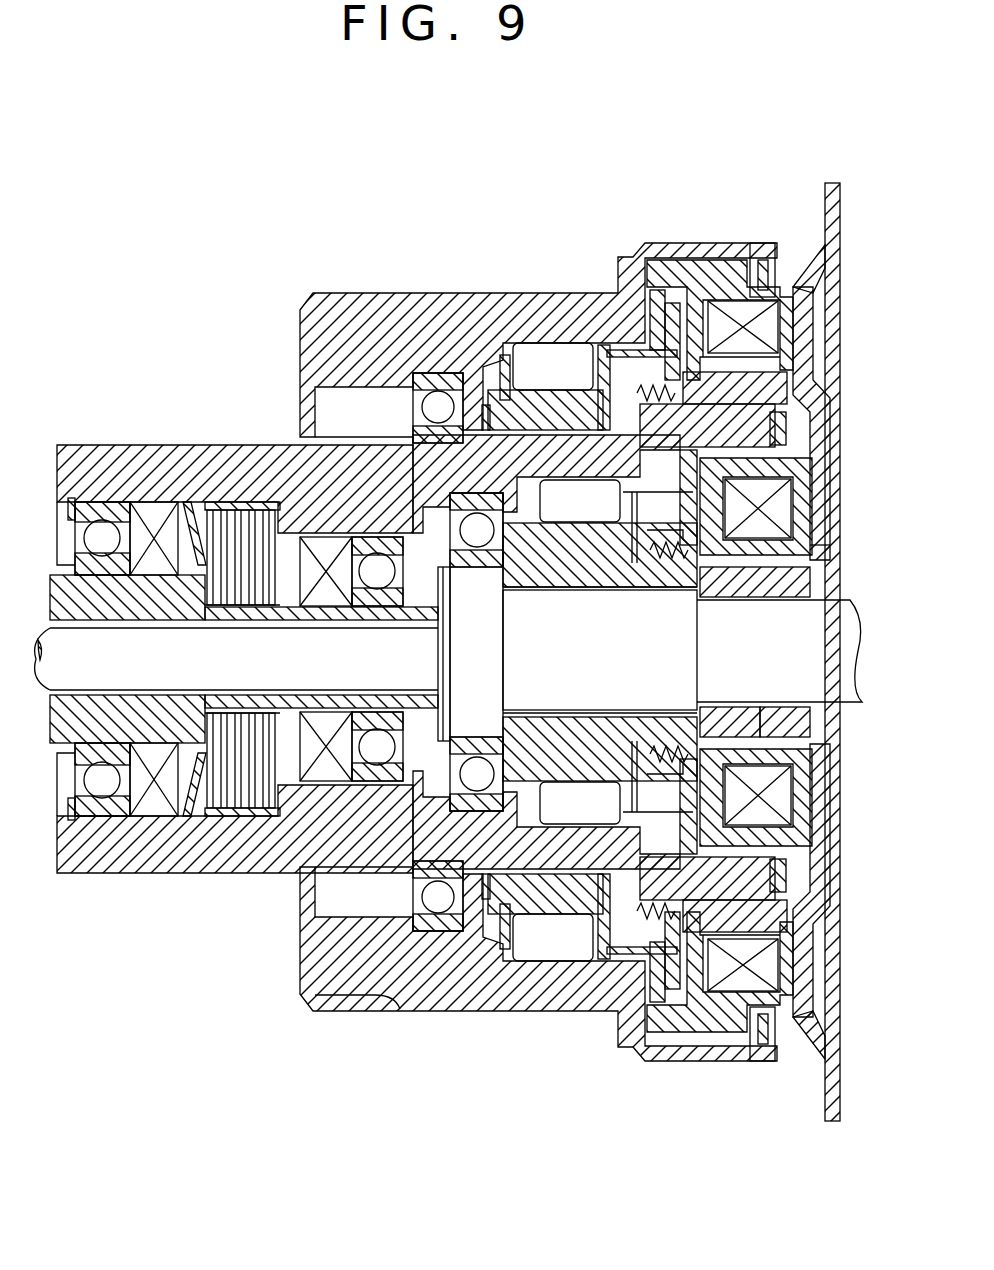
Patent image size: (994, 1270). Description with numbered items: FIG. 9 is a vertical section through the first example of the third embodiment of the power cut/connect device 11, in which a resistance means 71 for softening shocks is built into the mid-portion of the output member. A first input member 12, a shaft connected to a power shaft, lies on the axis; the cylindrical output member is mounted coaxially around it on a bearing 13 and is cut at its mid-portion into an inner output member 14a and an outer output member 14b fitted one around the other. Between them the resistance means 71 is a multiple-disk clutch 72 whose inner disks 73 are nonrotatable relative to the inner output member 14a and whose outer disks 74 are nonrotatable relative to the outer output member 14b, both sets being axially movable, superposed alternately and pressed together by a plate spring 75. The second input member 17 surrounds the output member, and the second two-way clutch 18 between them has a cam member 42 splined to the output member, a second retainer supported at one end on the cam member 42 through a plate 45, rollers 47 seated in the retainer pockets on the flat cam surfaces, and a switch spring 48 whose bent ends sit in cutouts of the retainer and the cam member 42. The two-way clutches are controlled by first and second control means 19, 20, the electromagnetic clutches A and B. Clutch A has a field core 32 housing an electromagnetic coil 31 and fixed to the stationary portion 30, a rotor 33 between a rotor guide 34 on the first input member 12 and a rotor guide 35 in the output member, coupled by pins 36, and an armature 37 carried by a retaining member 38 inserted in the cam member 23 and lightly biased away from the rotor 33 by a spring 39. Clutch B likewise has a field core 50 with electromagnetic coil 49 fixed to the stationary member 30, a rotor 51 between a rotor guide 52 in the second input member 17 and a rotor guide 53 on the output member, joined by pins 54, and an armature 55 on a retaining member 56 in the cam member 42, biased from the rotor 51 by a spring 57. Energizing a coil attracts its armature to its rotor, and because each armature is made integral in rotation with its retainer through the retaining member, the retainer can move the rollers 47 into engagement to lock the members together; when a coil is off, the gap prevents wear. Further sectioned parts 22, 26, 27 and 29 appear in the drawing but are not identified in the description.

The power cut/connect device 11 is at (424, 288).
The first input member 12 is at (341, 676).
The bearing 13 is at (102, 785).
The inner output member 14a is at (118, 600).
The outer output member 14b is at (95, 445).
The second input member 17 is at (363, 293).
The second two-way clutch 18 is at (503, 960).
The first control means 19 is at (820, 810).
The second control means 20 is at (805, 327).
The flange 22 is at (506, 700).
The cam member 23 is at (588, 735).
The bearing 26 is at (546, 560).
The roller 27 is at (605, 780).
The hub 29 is at (618, 560).
The stationary portion 30 is at (840, 224).
The electromagnetic coil 31 is at (780, 512).
The field core 32 is at (797, 470).
The rotor 33 is at (775, 735).
The rotor guide 34 is at (735, 720).
The rotor guide 35 is at (742, 900).
The pins 36 is at (782, 864).
The armature 37 is at (780, 432).
The retaining member 38 is at (690, 790).
The spring 39 is at (673, 565).
The cam member 42 is at (453, 960).
The plate 45 is at (470, 375).
The roller 47 is at (573, 990).
The switch spring 48 is at (603, 340).
The electromagnetic coil 49 is at (785, 315).
The field core 50 is at (737, 292).
The rotor 51 is at (712, 300).
The rotor guide 52 is at (657, 292).
The rotor guide 53 is at (782, 390).
The pins 54 is at (755, 1050).
The armature 55 is at (672, 330).
The retaining member 56 is at (613, 345).
The spring 57 is at (490, 412).
The resistance means 71 is at (240, 812).
The multiple-disk clutch 72 is at (215, 505).
The inner disks 73 is at (245, 610).
The outer disks 74 is at (248, 505).
The plate spring 75 is at (190, 520).
The electromagnetic clutch A is at (818, 548).
The electromagnetic clutch B is at (796, 298).